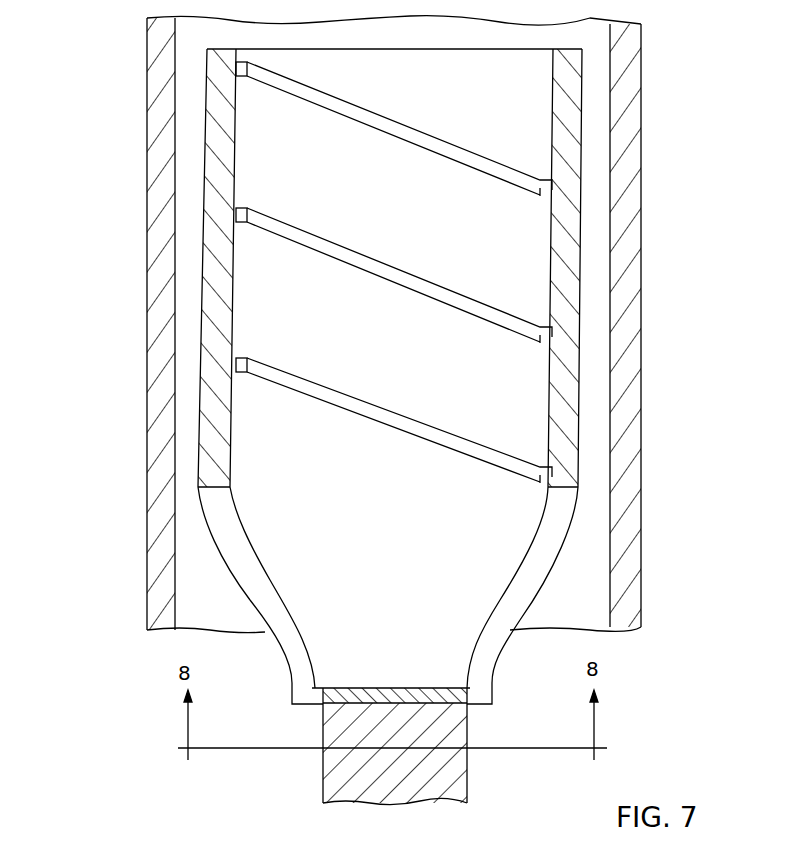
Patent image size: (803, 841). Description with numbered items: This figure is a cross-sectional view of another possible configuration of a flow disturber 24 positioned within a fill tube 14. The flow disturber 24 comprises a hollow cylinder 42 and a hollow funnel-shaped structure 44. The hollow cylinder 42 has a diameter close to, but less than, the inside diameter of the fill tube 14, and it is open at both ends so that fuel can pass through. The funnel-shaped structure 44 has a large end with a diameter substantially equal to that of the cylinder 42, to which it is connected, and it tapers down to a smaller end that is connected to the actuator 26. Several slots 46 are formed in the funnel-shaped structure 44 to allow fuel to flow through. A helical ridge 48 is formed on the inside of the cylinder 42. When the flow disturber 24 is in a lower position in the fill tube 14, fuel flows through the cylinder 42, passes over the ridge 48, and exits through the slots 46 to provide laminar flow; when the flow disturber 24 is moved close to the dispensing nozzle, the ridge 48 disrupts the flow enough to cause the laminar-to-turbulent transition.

The fill tube 14 is at (641, 193).
The flow disturber 24 is at (588, 98).
The hollow cylinder 42 is at (207, 103).
The helical ridge 48 is at (407, 124).
The slots 46 is at (223, 535).
The funnel-shaped structure 44 is at (553, 575).
The actuator 26 is at (323, 773).